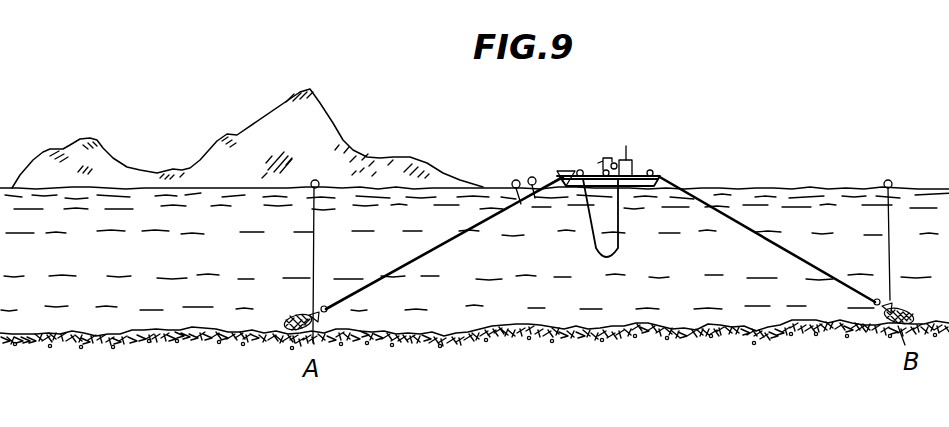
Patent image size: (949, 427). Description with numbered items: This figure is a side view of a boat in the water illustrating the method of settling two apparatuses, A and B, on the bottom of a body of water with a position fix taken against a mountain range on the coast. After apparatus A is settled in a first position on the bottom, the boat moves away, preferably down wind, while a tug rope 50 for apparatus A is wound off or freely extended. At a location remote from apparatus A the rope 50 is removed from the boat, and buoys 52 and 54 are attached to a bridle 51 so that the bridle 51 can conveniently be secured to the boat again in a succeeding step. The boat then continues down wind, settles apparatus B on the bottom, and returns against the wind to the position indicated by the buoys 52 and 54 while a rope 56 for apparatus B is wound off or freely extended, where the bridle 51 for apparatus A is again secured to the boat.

The tug rope 50 is at (471, 233).
The bridle 51 is at (559, 171).
The buoy 52 is at (545, 165).
The buoy 54 is at (513, 182).
The rope 56 is at (746, 213).